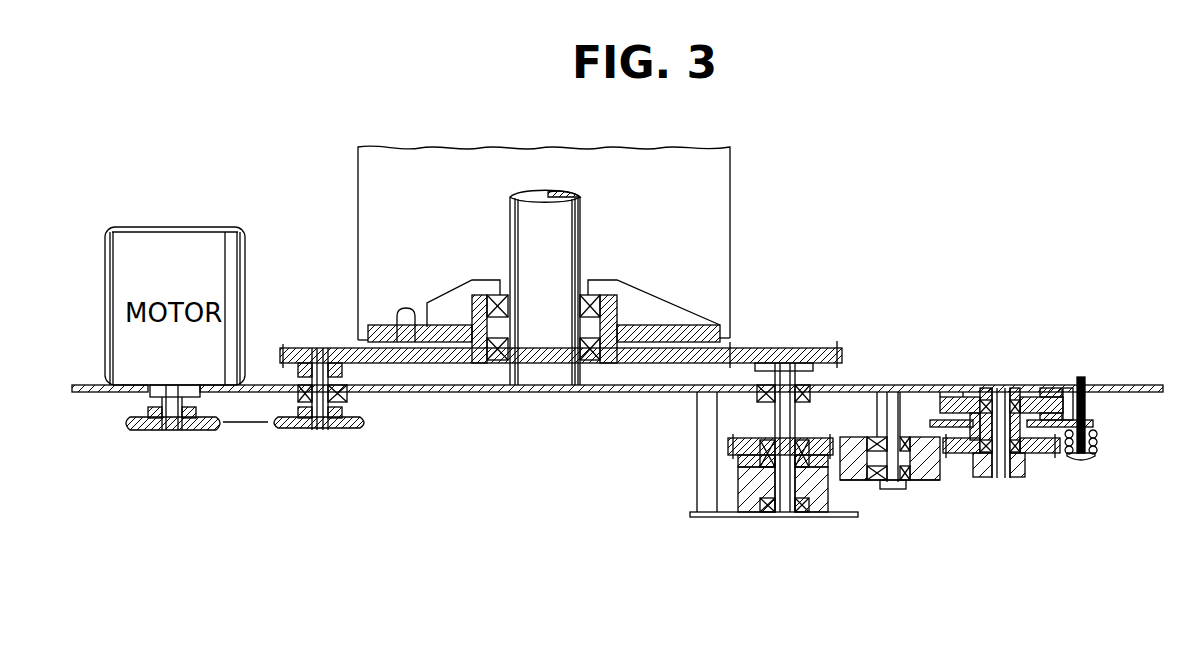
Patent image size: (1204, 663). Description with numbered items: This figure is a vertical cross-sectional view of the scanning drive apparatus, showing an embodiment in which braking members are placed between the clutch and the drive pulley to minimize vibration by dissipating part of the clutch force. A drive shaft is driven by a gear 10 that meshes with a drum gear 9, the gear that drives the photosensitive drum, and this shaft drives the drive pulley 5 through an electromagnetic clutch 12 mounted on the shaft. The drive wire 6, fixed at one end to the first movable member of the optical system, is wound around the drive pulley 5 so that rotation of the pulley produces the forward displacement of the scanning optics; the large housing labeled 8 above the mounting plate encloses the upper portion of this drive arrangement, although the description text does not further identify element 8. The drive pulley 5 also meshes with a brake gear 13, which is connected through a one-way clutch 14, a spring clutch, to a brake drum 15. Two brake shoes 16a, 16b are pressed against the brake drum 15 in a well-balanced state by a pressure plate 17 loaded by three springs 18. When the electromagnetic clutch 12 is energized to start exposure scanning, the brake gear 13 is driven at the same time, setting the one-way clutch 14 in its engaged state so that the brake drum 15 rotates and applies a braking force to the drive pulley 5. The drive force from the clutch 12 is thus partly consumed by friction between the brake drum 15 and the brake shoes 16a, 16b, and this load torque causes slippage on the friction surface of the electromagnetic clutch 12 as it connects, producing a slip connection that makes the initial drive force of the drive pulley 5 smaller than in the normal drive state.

The drive pulley 5 is at (918, 472).
The drive wire 6 is at (936, 470).
The housing 8 is at (365, 182).
The drum gear 9 is at (378, 364).
The gear 10 is at (808, 347).
The electromagnetic clutch 12 is at (817, 500).
The brake gear 13 is at (961, 452).
The one-way clutch 14 is at (1044, 440).
The brake drum 15 is at (1030, 396).
The brake shoe 16a is at (1054, 387).
The brake shoe 16b is at (1062, 410).
The pressure plate 17 is at (1092, 423).
The springs 18 is at (1090, 447).